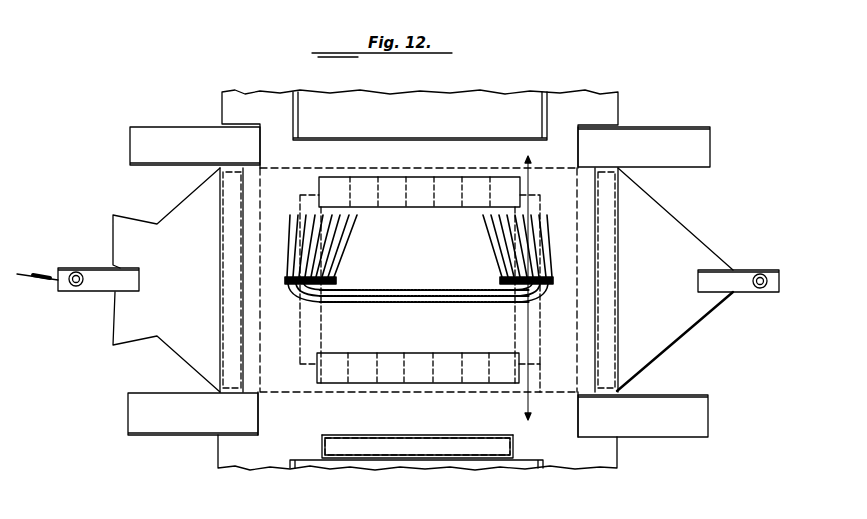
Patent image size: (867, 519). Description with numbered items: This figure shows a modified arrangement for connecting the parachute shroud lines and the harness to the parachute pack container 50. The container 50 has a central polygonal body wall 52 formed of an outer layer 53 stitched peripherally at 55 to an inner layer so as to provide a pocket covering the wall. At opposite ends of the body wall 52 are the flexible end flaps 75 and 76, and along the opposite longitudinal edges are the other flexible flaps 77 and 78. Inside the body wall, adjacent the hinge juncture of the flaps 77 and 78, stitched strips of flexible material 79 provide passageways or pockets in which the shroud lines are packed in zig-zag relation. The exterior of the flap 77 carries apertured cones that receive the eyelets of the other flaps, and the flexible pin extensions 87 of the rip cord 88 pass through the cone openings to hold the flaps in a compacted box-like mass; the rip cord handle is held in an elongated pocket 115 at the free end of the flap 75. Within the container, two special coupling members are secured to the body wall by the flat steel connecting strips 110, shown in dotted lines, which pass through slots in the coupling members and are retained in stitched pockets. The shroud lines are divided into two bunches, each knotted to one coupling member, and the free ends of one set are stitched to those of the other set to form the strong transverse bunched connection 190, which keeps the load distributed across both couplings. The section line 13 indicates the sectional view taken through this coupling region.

The section line 13- 13 is at (538, 292).
The flexible container 50 is at (645, 365).
The body portion or back 52 is at (562, 222).
The outer layer 53 is at (556, 375).
The peripheral stitching 55 is at (405, 168).
The flexible flap 75 is at (195, 197).
The flexible flap 76 is at (697, 322).
The flexible flap 77 is at (570, 96).
The flexible flap 78 is at (583, 462).
The strip of flexible material 79 is at (420, 188).
The flexible pin extension 87 is at (22, 272).
The flexible rip cord 88 is at (54, 286).
The steel fastening strip 110 is at (322, 333).
The pocket 115 is at (124, 345).
The transverse bunched connection 190 is at (395, 290).